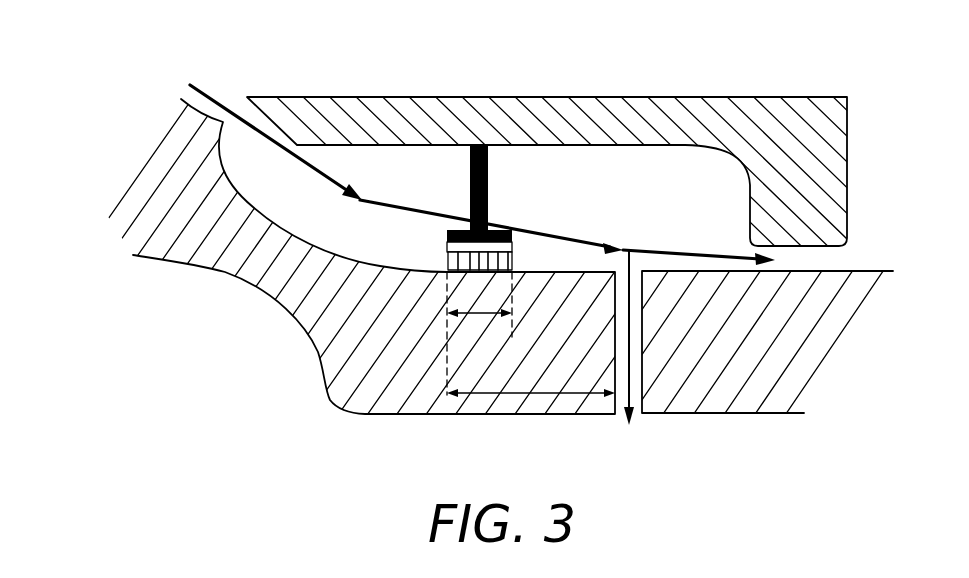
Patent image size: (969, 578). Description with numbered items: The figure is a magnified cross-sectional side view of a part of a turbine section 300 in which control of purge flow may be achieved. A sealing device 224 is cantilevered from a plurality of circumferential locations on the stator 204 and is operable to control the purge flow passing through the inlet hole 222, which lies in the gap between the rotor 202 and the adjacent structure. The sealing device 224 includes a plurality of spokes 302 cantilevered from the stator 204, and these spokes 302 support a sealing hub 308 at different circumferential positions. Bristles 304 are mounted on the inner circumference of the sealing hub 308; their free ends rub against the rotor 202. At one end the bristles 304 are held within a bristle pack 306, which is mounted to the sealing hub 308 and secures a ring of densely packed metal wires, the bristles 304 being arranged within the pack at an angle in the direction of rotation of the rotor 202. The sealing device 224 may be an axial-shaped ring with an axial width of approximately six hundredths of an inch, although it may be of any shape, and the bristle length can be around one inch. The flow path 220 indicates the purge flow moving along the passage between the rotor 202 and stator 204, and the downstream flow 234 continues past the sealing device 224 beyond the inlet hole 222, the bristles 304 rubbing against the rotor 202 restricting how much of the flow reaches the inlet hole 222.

The turbine section 300 is at (97, 52).
The rotor 202 is at (228, 268).
The stator 204 is at (506, 96).
The fluid flow path 220 is at (263, 137).
The inlet hole 222 is at (642, 415).
The sealing device 224 is at (503, 201).
The downstream flow 234 is at (733, 257).
The spokes 302 is at (467, 173).
The bristles 304 is at (510, 264).
The bristle pack 306 is at (447, 246).
The sealing hub 308 is at (447, 236).